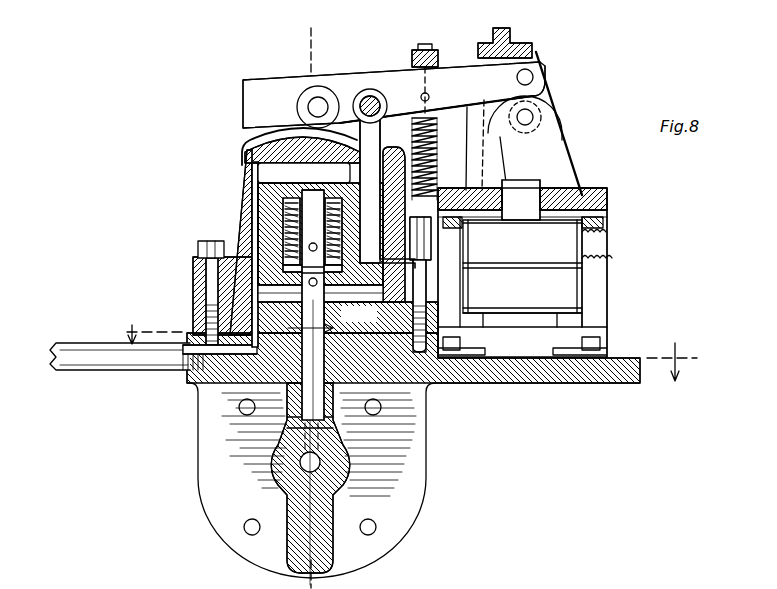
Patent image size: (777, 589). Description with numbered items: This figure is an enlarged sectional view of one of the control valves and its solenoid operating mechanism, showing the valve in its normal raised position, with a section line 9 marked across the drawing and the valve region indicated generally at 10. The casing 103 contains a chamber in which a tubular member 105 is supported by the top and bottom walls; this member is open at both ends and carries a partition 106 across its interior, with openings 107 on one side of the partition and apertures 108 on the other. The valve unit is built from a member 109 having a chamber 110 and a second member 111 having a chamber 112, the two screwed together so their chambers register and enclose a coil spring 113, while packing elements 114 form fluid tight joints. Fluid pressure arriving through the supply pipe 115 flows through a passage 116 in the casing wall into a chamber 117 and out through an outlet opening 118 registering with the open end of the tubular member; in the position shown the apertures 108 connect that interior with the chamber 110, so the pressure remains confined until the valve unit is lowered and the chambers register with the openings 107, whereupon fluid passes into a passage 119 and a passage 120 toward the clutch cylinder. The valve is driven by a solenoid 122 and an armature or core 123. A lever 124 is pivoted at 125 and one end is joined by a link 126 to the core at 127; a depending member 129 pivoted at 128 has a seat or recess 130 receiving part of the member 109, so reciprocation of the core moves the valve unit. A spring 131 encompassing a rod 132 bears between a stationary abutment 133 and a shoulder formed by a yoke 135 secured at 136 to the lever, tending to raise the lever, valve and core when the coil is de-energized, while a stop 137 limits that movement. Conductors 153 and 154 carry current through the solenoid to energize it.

The section line 9 is at (412, 344).
The valve 10 is at (299, 324).
The casing 103 is at (252, 200).
The tubular member 105 is at (320, 291).
The partition 106 is at (430, 283).
The openings 107 is at (381, 317).
The apertures 108 is at (287, 238).
The member of valve unit 109 is at (284, 256).
The chamber 110 is at (258, 210).
The second member of valve unit 111 is at (262, 287).
The chamber 112 is at (258, 270).
The coil spring 113 is at (282, 226).
The packing elements 114 is at (304, 174).
The fluid pressure supply pipe 115 is at (86, 362).
The passage 116 is at (242, 158).
The chamber 117 is at (295, 140).
The outlet opening 118 is at (320, 191).
The passage 119 is at (427, 398).
The passage 120 is at (318, 463).
The solenoid 122 is at (570, 292).
The armature or core 123 is at (540, 192).
The lever 124 is at (359, 88).
The pivot 125 is at (318, 104).
The link 126 is at (530, 94).
The connection 127 is at (528, 117).
The pivot 128 is at (372, 102).
The depending member 129 is at (387, 118).
The seat or recess 130 is at (465, 145).
The spring 131 is at (467, 104).
The rod 132 is at (480, 36).
The stationary abutment 133 is at (441, 228).
The yoke 135 is at (424, 50).
The securing point 136 is at (428, 94).
The stop 137 is at (532, 56).
The conductor 153 is at (612, 258).
The conductor 154 is at (606, 232).